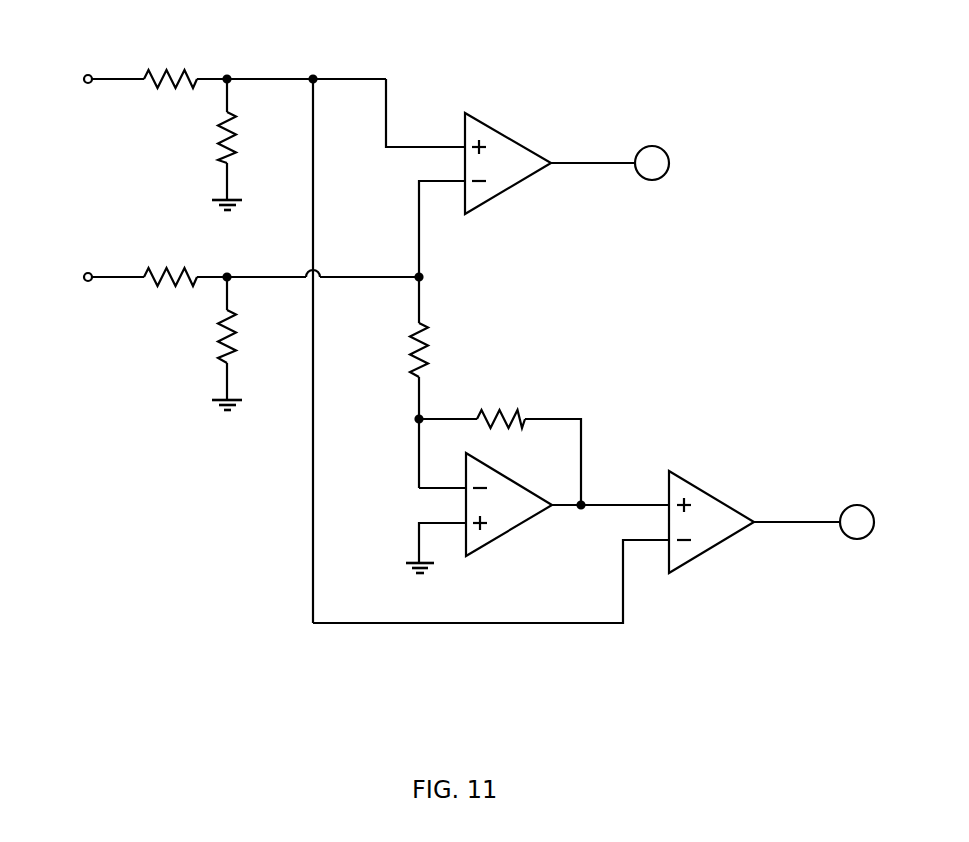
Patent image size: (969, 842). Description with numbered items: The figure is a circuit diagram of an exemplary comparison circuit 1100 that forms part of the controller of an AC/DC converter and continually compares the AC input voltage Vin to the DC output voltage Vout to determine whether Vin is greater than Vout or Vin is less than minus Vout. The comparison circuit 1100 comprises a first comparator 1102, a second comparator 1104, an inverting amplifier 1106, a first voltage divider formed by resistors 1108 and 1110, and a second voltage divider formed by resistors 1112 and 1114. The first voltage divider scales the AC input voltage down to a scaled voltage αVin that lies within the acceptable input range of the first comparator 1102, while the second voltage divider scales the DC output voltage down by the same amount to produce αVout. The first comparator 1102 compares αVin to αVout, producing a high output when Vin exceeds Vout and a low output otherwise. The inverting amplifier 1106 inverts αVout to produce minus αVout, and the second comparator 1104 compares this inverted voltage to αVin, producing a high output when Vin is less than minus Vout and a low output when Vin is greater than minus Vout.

The comparison circuit 1100 is at (800, 226).
The first comparator 1102 is at (513, 159).
The second comparator 1104 is at (721, 517).
The inverting amplifier 1106 is at (515, 500).
The resistor 1108 is at (170, 60).
The resistor 1110 is at (196, 137).
The resistor 1112 is at (170, 259).
The resistor 1114 is at (196, 336).